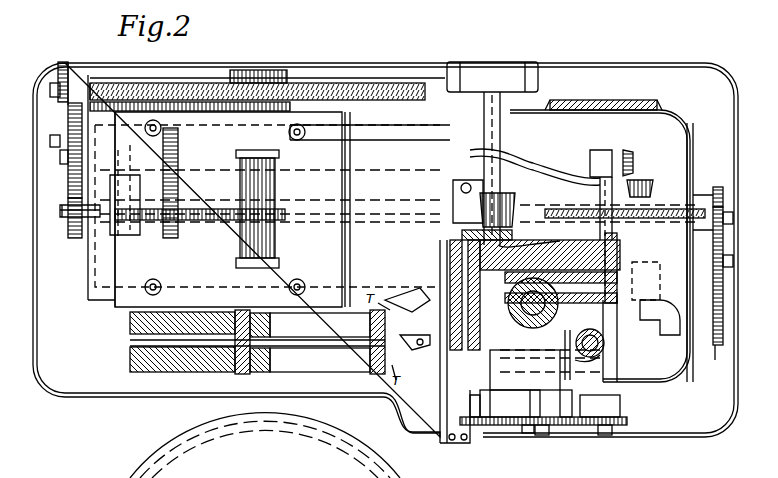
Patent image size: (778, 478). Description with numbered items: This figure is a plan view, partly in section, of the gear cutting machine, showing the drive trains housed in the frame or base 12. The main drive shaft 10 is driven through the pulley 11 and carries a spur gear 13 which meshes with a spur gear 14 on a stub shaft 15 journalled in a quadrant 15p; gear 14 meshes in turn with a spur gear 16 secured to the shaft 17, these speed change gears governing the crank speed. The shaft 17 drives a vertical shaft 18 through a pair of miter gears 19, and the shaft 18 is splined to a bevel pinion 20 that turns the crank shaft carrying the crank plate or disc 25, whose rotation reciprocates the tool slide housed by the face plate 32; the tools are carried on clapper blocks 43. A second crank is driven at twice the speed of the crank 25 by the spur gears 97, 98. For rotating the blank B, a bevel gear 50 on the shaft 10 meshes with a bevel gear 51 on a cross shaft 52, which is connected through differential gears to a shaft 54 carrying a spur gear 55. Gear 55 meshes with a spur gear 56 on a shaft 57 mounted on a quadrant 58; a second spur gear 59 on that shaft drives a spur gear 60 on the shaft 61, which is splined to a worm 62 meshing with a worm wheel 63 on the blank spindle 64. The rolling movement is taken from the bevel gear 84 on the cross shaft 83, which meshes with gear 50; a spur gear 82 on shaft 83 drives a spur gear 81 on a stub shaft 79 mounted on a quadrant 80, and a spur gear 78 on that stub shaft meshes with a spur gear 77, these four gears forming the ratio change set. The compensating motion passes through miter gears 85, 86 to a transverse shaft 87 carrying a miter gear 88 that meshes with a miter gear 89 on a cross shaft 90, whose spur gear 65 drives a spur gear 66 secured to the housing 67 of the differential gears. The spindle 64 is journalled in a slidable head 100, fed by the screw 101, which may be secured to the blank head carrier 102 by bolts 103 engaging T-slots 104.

The main drive shaft 10 is at (505, 138).
The pulley 11 is at (522, 70).
The frame or base 12 is at (672, 378).
The spur gear 13 is at (515, 425).
The spur gear 14 is at (530, 433).
The stub shaft 15 is at (545, 435).
The quadrant 15p is at (600, 412).
The spur gear 16 is at (627, 420).
The shaft 17 is at (608, 435).
The vertical shaft 18 is at (604, 338).
The miter gears 19 is at (606, 360).
The bevel pinion 20 is at (605, 344).
The crank plate or disc 25 is at (510, 330).
The face plate 32 is at (460, 443).
The clapper blocks 43 is at (414, 310).
The bevel gear 50 is at (515, 200).
The bevel gear 51 is at (445, 232).
The cross shaft 52 is at (374, 216).
The shaft 54 is at (85, 232).
The spur gear 55 is at (70, 230).
The spur gear 56 is at (70, 176).
The shaft 57 is at (50, 140).
The quadrant 58 is at (72, 78).
The spur gear 59 is at (62, 158).
The spur gear 60 is at (60, 68).
The shaft 61 is at (80, 90).
The worm 62 is at (283, 74).
The worm wheel 63 is at (352, 83).
The blank spindle 64 is at (270, 238).
The spur gear 65 is at (165, 130).
The spur gear 66 is at (176, 228).
The housing 67 is at (150, 235).
The spur gear 77 is at (718, 342).
The spur gear 78 is at (732, 240).
The stub shaft 79 is at (734, 262).
The quadrant 80 is at (702, 205).
The spur gear 81 is at (724, 290).
The spur gear 82 is at (726, 191).
The cross shaft 83 is at (565, 214).
The bevel gear 84 is at (500, 240).
The miter gear 85 is at (662, 322).
The miter gear 86 is at (650, 278).
The transverse shaft 87 is at (650, 196).
The miter gear 88 is at (652, 182).
The miter gear 89 is at (630, 160).
The cross shaft 90 is at (533, 168).
The spur gear 97 is at (508, 425).
The spur gear 98 is at (575, 425).
The slidable head 100 is at (335, 268).
The screw 101 is at (218, 222).
The blank head carrier 102 is at (340, 242).
The bolts 103 is at (300, 138).
The T-slots 104 is at (340, 133).
The blank B is at (130, 355).